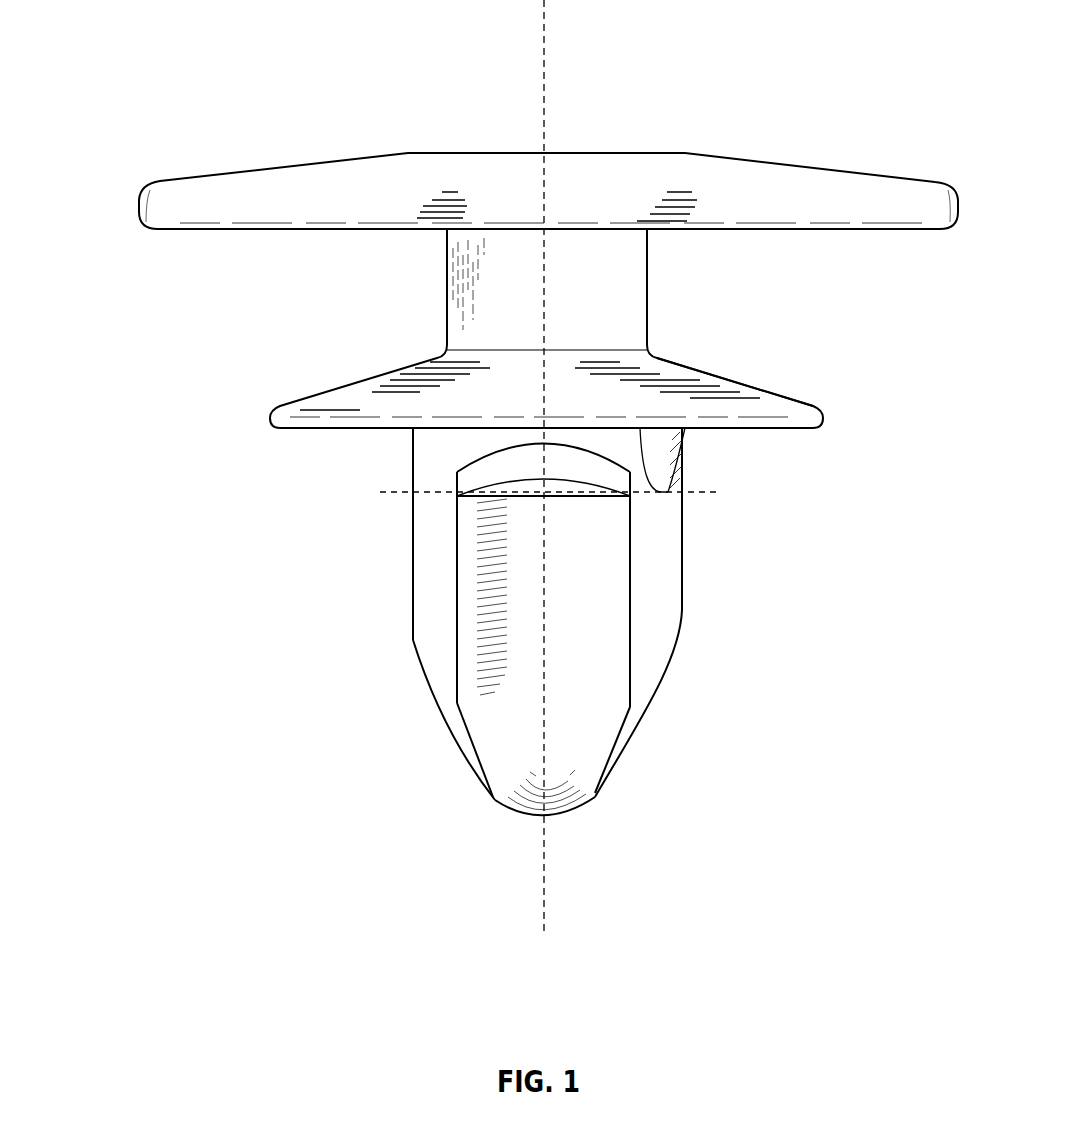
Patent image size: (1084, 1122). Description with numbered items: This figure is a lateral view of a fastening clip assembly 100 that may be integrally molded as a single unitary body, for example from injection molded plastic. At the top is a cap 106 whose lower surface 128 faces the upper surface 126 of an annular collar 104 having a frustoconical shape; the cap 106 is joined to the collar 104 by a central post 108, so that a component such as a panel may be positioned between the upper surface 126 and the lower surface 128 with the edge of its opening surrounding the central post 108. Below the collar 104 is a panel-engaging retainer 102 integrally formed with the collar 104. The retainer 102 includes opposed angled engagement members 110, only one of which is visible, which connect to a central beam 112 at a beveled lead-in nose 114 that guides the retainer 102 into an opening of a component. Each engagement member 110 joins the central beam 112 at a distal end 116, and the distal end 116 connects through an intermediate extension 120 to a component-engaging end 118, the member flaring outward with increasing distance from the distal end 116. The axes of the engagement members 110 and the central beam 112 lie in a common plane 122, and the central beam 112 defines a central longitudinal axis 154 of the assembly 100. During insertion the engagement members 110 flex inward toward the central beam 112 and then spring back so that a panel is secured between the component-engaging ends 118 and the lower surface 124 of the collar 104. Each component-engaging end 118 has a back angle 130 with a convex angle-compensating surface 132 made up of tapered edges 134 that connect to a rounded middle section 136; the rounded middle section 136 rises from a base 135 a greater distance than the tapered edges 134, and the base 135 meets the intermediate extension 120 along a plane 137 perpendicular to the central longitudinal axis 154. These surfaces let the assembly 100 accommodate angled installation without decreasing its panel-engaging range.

The fastening clip assembly 100 is at (134, 112).
The panel-engaging retainer 102 is at (370, 674).
The annular collar 104 is at (816, 407).
The cap 106 is at (918, 192).
The central post 108 is at (446, 288).
The engagement member 110 is at (505, 735).
The central beam 112 is at (675, 555).
The beveled lead-in nose 114 is at (560, 815).
The distal end 116 is at (590, 772).
The component-engaging end 118 is at (457, 497).
The intermediate extension 120 is at (603, 672).
The common plane 122 is at (545, 66).
The lower surface 124 is at (763, 430).
The upper surface 126 is at (728, 383).
The lower surface 128 is at (753, 230).
The back angle 130 is at (468, 467).
The angle-compensating surface 132 is at (572, 463).
The tapered edge 134 is at (456, 484).
The base 135 is at (513, 500).
The rounded middle section 136 is at (513, 463).
The plane 137 is at (715, 495).
The central longitudinal axis 154 is at (543, 5).